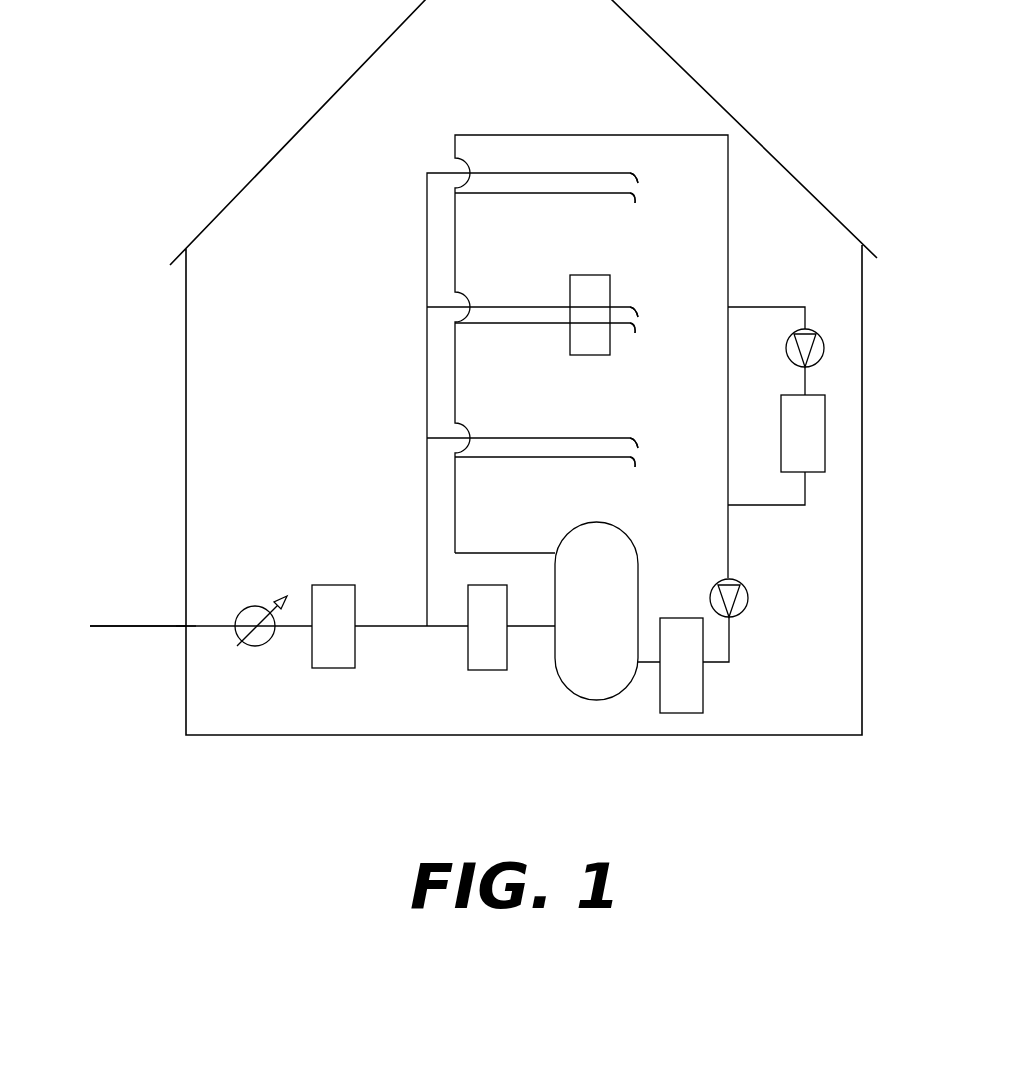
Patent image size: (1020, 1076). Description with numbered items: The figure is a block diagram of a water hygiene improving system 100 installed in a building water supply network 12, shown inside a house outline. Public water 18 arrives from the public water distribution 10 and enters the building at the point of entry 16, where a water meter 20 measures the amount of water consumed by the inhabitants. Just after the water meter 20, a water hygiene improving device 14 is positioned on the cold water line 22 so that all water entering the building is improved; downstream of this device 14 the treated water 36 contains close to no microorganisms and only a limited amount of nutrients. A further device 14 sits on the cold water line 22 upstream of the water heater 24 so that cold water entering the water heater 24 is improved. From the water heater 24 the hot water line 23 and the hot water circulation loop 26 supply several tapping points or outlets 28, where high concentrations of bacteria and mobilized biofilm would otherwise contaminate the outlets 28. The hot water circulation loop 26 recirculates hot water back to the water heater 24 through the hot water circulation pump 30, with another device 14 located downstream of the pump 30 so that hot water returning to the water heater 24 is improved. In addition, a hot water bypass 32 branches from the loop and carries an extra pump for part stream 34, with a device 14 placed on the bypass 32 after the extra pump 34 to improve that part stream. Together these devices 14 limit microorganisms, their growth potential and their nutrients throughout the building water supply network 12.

The water hygiene improving system 100 is at (386, 158).
The public water distribution 10 is at (107, 622).
The building water supply network 12 is at (569, 385).
The water hygiene improving device 14 is at (348, 638).
The point of entry 16 is at (185, 622).
The public water 18 is at (140, 628).
The water meter 20 is at (250, 606).
The cold water line 22 is at (500, 172).
The hot water line 23 is at (480, 553).
The water heater 24 is at (562, 690).
The hot water circulation loop 26 is at (578, 135).
The outlets 28 is at (651, 204).
The hot water circulation pump 30 is at (750, 600).
The hot water bypass 32 is at (752, 307).
The extra pump for part stream 34 is at (825, 350).
The treated water 36 is at (372, 622).